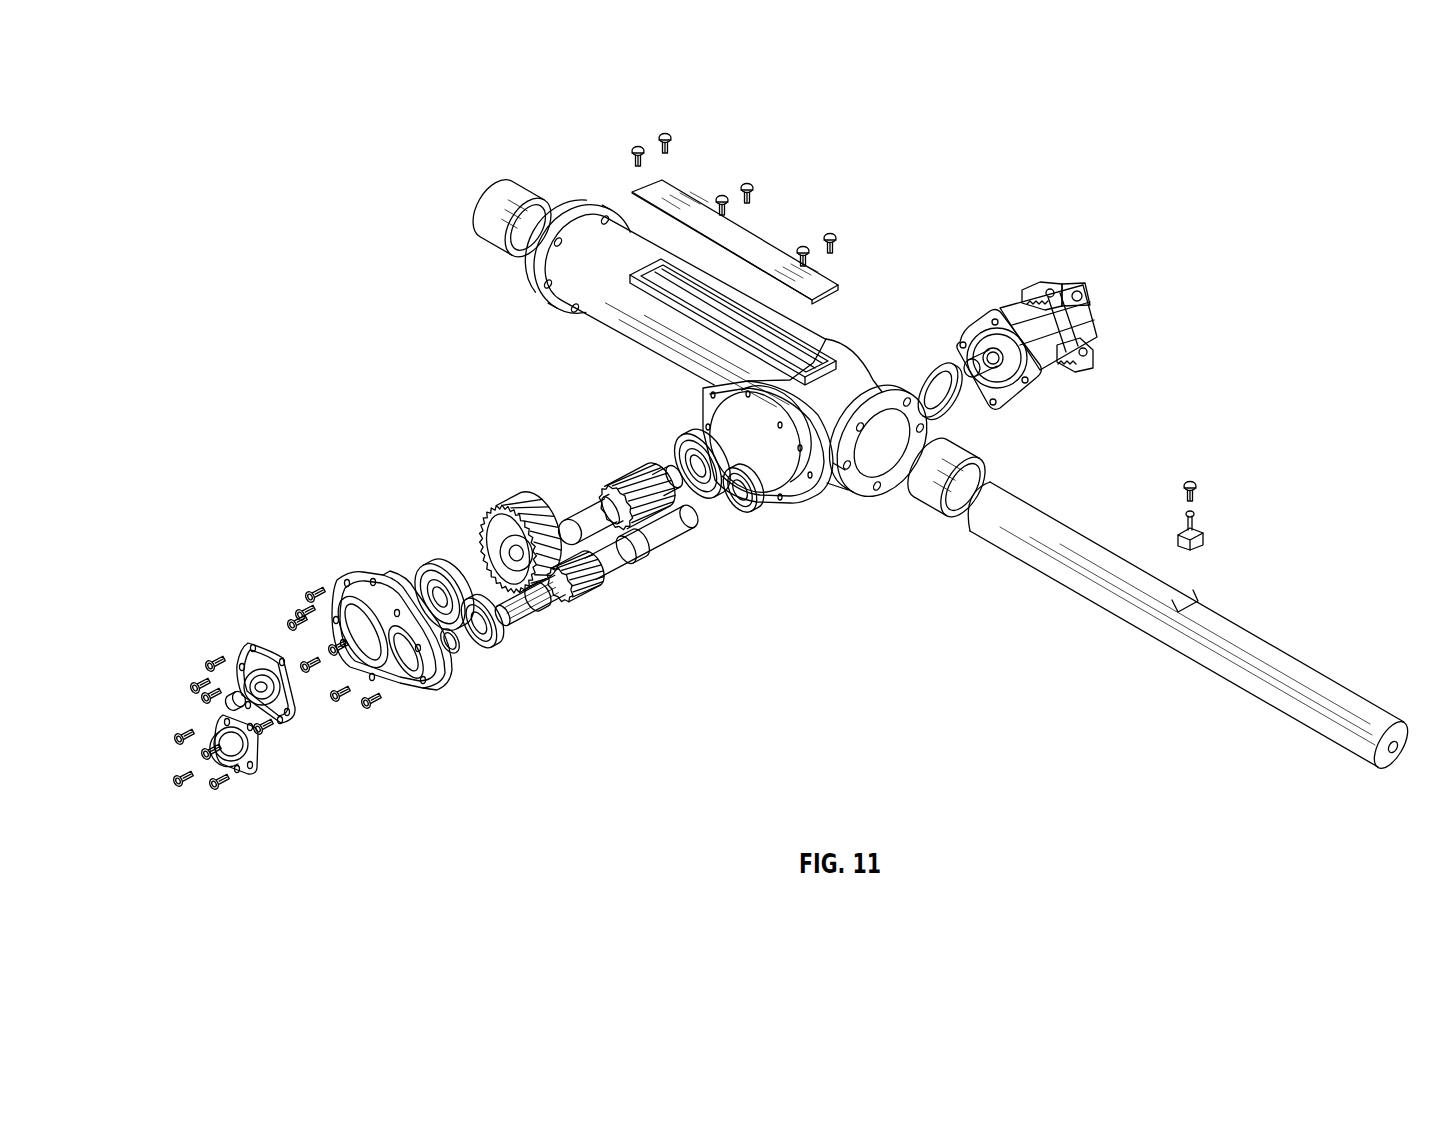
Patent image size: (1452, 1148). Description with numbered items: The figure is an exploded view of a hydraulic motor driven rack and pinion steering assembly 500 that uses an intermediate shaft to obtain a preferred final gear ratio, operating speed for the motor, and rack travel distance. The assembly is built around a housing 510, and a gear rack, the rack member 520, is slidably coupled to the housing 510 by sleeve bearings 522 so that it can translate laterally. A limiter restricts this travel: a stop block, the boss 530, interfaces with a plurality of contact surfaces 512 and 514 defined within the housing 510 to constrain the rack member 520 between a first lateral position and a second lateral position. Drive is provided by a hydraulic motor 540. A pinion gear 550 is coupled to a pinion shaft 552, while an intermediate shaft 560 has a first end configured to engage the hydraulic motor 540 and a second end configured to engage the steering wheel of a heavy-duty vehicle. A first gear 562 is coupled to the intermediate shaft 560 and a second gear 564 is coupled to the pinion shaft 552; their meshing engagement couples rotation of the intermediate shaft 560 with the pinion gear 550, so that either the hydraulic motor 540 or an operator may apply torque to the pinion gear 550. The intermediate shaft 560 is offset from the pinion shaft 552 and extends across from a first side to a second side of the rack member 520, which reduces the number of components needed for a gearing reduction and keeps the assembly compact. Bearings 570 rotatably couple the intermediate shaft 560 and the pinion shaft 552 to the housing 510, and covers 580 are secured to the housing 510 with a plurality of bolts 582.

The rack and pinion steering assembly 500 is at (1202, 190).
The housing 510 is at (640, 323).
The contact surface 512 is at (660, 275).
The contact surface 514 is at (808, 358).
The rack member 520 is at (1298, 666).
The sleeve bearings 522 is at (515, 192).
The boss 530 is at (1200, 524).
The hydraulic motor 540 is at (1093, 313).
The pinion gear 550 is at (645, 475).
The pinion shaft 552 is at (590, 512).
The intermediate shaft 560 is at (625, 570).
The gear 562 is at (582, 595).
The gear 564 is at (512, 507).
The bearings 570 is at (697, 433).
The covers 580 is at (437, 690).
The bolts 582 is at (296, 601).